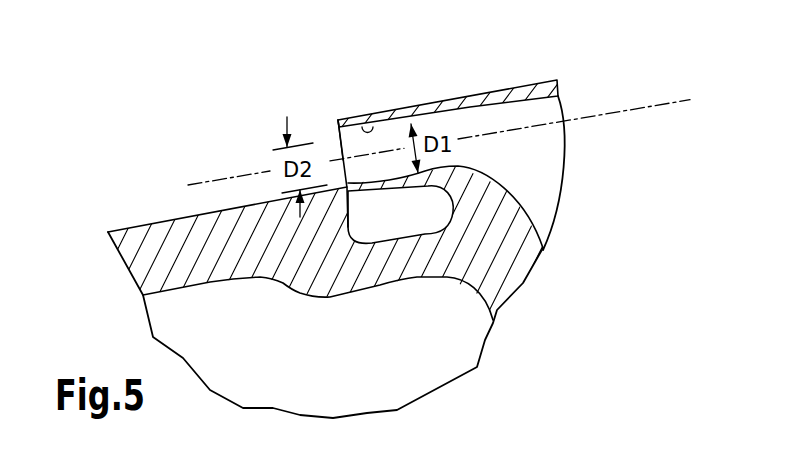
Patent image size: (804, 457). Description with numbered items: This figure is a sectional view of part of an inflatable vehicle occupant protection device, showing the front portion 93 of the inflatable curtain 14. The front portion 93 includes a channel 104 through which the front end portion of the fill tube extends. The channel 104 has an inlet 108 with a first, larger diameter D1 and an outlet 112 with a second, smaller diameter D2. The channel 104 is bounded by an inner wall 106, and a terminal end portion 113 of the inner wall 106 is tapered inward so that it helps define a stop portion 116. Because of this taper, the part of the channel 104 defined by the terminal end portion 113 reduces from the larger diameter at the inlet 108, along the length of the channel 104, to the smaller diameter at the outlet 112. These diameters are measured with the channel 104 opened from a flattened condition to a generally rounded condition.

The front portion 93 is at (220, 128).
The inflatable curtain 14 is at (558, 77).
The channel 104 is at (387, 143).
The inner wall 106 is at (383, 121).
The inlet 108 is at (475, 128).
The outlet 112 is at (343, 143).
The terminal end portion 113 is at (345, 133).
The stop portion 116 is at (344, 190).